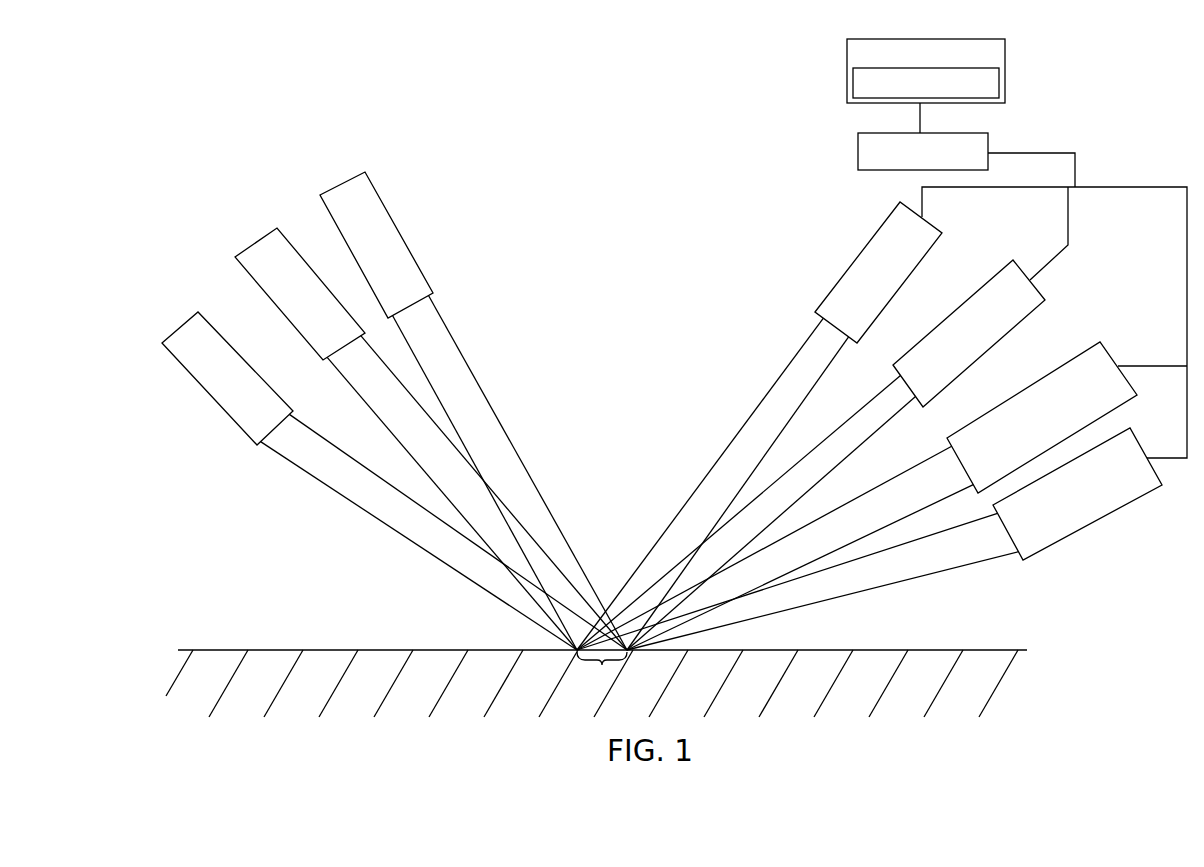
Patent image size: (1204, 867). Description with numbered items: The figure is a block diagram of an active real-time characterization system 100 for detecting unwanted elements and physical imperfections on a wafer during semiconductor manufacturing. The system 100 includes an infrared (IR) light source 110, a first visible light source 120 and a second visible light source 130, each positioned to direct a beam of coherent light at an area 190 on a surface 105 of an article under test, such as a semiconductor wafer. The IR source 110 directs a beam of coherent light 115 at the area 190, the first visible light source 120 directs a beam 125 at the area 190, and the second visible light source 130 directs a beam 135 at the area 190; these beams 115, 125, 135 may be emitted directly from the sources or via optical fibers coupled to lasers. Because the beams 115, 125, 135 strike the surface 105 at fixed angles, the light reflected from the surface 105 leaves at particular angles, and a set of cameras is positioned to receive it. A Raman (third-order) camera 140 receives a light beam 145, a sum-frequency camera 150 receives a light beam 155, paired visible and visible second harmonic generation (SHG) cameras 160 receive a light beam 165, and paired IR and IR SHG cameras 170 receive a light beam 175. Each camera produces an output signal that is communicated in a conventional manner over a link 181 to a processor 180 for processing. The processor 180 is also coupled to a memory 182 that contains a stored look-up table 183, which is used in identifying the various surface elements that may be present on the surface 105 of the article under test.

The active real-time characterization system 100 is at (633, 90).
The surface 105 is at (1017, 652).
The infrared (IR) light source 110 is at (202, 316).
The beam of coherent light 115 is at (327, 488).
The first visible light source 120 is at (278, 229).
The beam of coherent light 125 is at (384, 430).
The second visible light source 130 is at (365, 172).
The beam of coherent light 135 is at (455, 342).
The Raman (third-order) camera 140 is at (856, 258).
The light beam 145 is at (788, 364).
The sum-frequency camera 150 is at (1013, 262).
The light beam 155 is at (851, 421).
The paired visible and visible second harmonic generation (SHG) cameras 160 is at (1101, 342).
The light beam 165 is at (897, 480).
The paired IR and IR second harmonic generation (SHG) cameras 170 is at (1141, 446).
The light beam 175 is at (922, 550).
The processor 180 is at (858, 155).
The link 181 is at (1113, 186).
The memory 182 is at (1006, 73).
The look-up table 183 is at (870, 67).
The area 190 is at (601, 669).